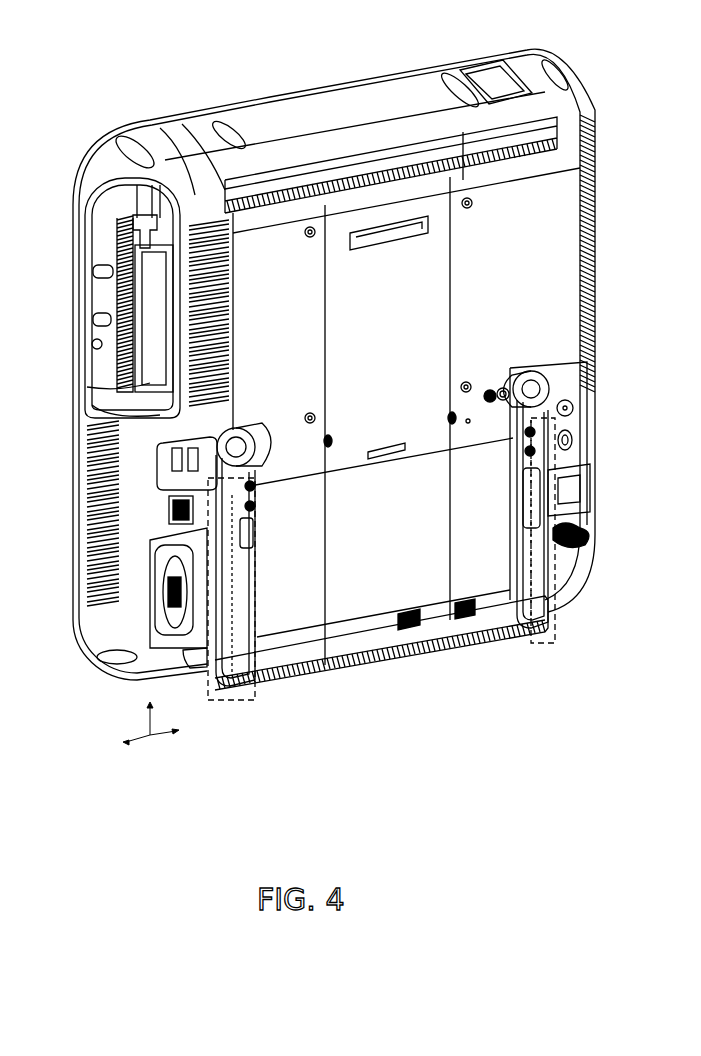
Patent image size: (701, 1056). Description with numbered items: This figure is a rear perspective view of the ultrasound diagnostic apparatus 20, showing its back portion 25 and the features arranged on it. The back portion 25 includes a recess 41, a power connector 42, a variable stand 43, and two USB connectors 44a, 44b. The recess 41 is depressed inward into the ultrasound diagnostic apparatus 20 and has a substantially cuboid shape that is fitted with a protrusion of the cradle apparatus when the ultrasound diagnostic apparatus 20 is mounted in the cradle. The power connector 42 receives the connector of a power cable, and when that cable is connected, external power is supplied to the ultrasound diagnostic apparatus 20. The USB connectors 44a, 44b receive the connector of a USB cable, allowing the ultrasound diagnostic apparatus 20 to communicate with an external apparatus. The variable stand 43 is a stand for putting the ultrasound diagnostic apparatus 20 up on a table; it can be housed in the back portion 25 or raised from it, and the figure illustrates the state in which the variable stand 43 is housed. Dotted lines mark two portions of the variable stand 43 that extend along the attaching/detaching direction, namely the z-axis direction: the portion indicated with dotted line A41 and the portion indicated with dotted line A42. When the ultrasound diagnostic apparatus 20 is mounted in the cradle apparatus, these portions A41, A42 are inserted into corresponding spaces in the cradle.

The ultrasound diagnostic apparatus 20 is at (313, 70).
The back portion 25 is at (520, 309).
The recess 41 is at (432, 222).
The power connector 42 is at (572, 583).
The variable stand 43 is at (405, 662).
The USB connector 44a is at (158, 467).
The USB connector 44b is at (160, 493).
The portion indicated with dotted line A41 is at (547, 648).
The portion indicated with dotted line A42 is at (233, 700).